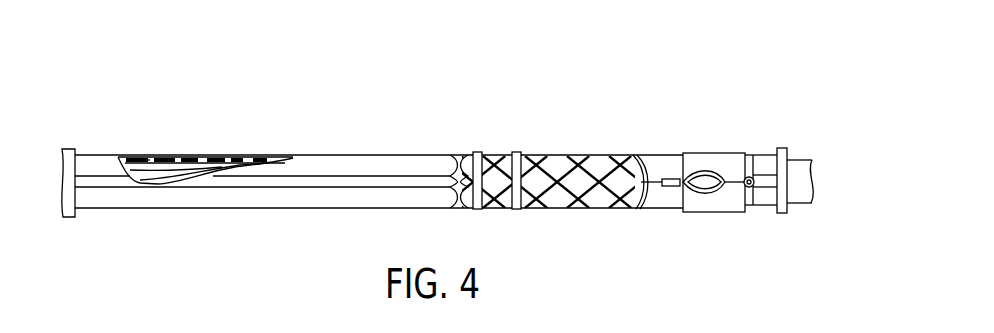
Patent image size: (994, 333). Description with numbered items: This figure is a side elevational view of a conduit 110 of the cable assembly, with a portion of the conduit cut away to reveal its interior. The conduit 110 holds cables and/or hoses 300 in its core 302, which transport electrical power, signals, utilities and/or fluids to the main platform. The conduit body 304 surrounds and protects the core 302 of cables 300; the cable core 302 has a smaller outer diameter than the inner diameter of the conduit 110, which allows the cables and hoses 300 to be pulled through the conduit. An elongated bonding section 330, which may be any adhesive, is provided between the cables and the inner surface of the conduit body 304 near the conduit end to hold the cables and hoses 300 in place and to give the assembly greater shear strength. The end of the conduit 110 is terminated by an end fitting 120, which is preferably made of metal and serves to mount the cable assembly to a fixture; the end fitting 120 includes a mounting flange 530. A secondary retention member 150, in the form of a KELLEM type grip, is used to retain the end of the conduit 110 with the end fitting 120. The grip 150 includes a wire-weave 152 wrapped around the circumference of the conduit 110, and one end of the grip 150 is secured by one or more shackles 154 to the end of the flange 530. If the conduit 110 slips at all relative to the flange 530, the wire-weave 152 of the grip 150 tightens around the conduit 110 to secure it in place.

The conduit 110 is at (712, 83).
The end fitting 120 is at (757, 215).
The secondary retention member 150 is at (536, 200).
The wire-weave 152 is at (587, 167).
The shackle 154 is at (743, 190).
The cables and/or hoses 300 is at (213, 178).
The core 302 is at (151, 164).
The conduit body 304 is at (270, 157).
The elongated bonding section 330 is at (233, 162).
The mounting flange 530 is at (787, 153).